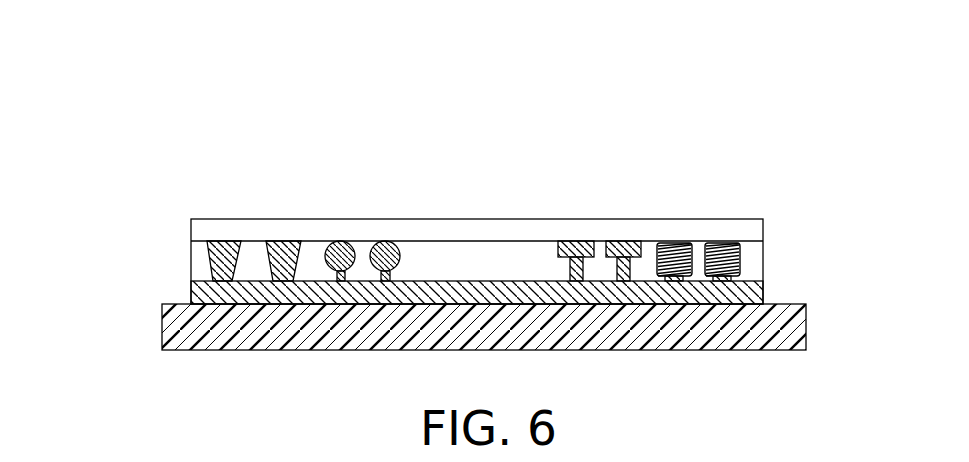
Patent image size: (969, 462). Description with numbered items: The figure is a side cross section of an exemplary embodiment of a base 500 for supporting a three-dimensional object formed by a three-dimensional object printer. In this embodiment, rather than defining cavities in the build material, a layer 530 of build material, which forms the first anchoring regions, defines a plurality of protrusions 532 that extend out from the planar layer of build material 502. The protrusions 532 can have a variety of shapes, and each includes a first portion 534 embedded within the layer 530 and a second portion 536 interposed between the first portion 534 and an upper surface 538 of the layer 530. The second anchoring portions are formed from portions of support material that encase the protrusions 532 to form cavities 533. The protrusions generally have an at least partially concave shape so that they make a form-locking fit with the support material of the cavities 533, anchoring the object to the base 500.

The base 500 is at (238, 138).
The planar layer of build material 502 is at (190, 293).
The layer of build material 530 is at (213, 262).
The protrusions 532 is at (228, 205).
The cavities 533 is at (473, 285).
The first portion 534 is at (236, 243).
The second portion 536 is at (385, 243).
The upper surface 538 is at (757, 241).